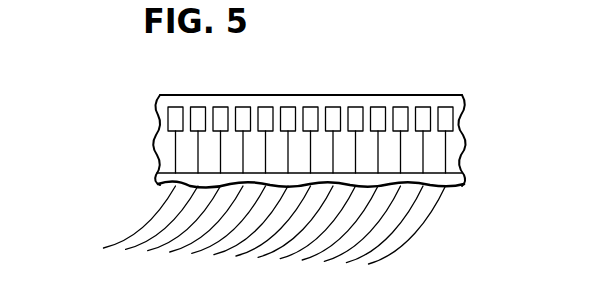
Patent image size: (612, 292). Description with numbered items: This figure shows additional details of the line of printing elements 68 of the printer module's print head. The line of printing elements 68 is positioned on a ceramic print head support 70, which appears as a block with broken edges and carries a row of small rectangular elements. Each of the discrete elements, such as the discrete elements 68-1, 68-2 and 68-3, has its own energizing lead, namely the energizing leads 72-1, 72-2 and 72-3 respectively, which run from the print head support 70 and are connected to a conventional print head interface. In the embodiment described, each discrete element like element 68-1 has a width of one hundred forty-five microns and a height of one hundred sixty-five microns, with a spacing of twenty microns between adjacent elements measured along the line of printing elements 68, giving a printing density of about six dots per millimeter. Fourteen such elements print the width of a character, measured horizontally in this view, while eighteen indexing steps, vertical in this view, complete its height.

The line of printing elements 68 is at (453, 120).
The discrete printing element 68-1 is at (377, 117).
The discrete printing element 68-2 is at (355, 117).
The discrete printing element 68-3 is at (334, 118).
The print head support 70 is at (456, 153).
The energizing lead 72-1 is at (372, 207).
The energizing lead 72-2 is at (337, 220).
The energizing lead 72-3 is at (293, 240).